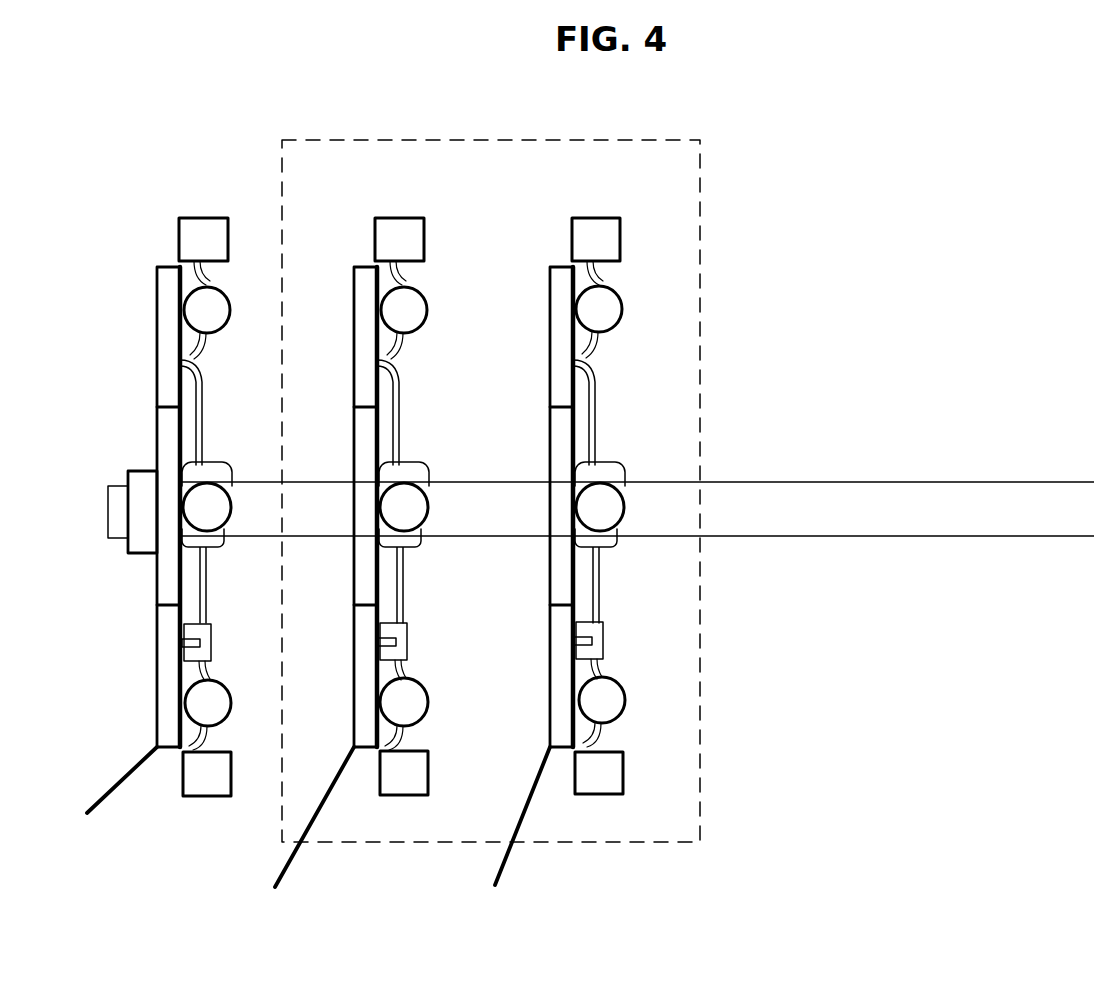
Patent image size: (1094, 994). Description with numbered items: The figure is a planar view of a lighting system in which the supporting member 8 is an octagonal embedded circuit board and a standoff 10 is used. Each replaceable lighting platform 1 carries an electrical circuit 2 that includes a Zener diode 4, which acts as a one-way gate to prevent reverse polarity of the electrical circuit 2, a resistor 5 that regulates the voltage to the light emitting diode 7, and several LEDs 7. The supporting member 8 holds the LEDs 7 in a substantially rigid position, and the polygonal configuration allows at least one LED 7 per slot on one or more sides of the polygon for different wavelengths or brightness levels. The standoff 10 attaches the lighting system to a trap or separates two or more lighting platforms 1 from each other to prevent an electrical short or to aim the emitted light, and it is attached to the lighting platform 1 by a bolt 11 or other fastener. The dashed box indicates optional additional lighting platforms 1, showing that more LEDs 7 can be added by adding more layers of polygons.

The replaceable lighting platform 1 is at (309, 832).
The electrical circuit 2 is at (206, 378).
The Zener diode 4 is at (201, 634).
The resistor 5 is at (213, 468).
The light emitting diode 7 is at (204, 247).
The supporting member 8 is at (165, 318).
The standoff 10 is at (115, 517).
The bolt 11 is at (137, 497).